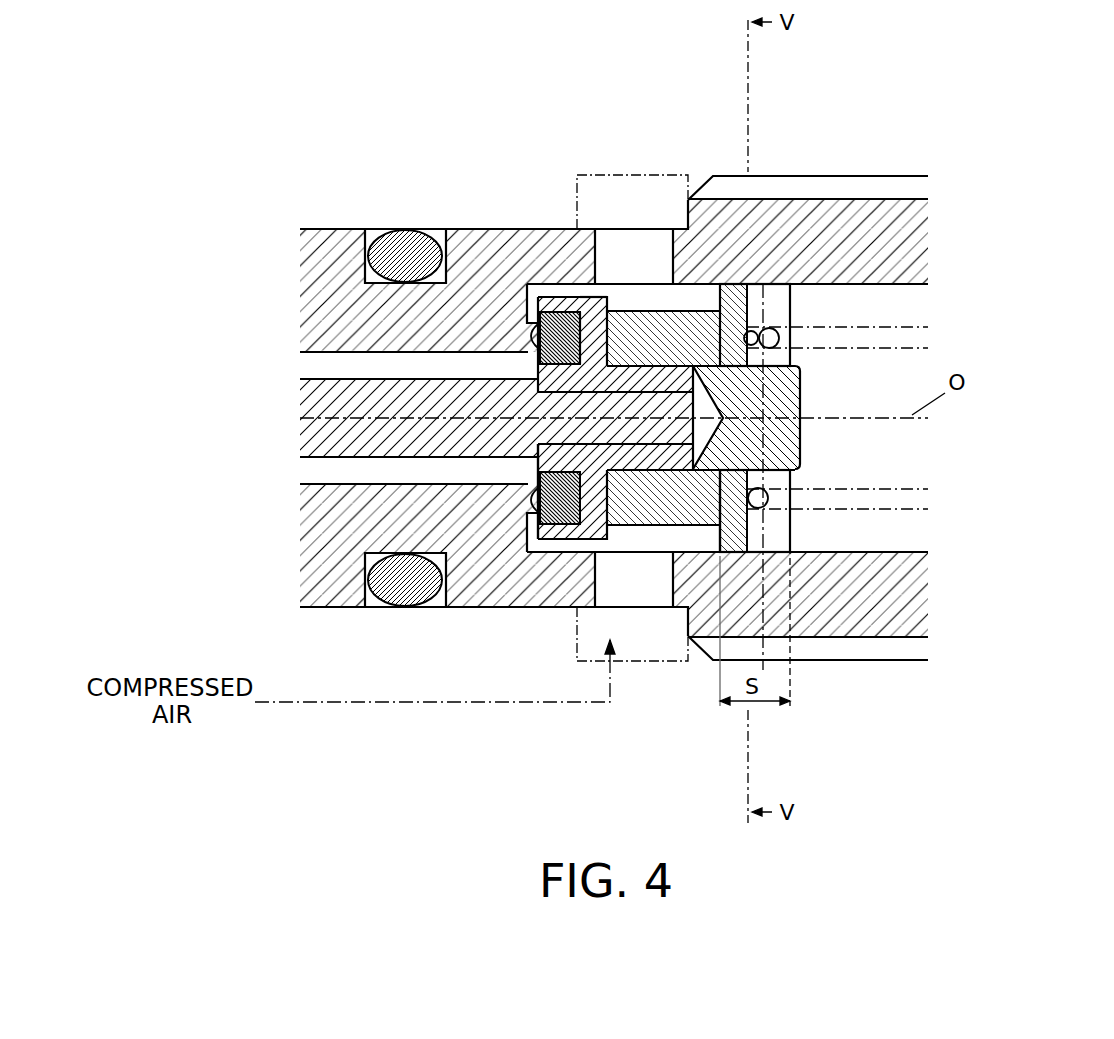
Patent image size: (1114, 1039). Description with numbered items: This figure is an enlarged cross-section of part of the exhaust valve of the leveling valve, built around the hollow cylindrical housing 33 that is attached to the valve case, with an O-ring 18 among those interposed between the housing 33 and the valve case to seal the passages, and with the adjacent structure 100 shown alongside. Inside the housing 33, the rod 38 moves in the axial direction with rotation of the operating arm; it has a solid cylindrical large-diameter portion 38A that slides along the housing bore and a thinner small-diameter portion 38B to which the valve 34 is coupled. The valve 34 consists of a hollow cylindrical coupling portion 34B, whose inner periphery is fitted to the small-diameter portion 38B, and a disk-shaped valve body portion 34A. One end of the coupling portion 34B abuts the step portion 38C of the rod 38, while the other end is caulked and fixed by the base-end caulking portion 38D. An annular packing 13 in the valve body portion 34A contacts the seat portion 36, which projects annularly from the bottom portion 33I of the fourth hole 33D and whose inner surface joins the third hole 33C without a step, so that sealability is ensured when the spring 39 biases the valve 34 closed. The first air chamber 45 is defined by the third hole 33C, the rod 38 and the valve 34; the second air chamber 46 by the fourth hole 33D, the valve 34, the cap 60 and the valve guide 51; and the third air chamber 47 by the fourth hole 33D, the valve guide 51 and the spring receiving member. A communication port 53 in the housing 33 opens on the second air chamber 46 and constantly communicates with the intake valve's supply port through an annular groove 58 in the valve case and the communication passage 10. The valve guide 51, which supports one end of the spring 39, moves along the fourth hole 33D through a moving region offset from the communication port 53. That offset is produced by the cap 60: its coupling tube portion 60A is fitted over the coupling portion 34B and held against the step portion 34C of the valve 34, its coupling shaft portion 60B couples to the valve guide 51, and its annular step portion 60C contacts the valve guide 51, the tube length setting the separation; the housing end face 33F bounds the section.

The communication passage 10 is at (330, 702).
The machine body 100 is at (937, 176).
The packing 13 is at (548, 556).
The O-ring 18 is at (383, 233).
The housing 33 is at (880, 222).
The third hole 33C is at (418, 575).
The fourth hole 33D is at (873, 553).
The housing bottom face 33F is at (877, 661).
The bottom portion (step portion) 33I is at (527, 488).
The valve 34 is at (665, 84).
The valve body portion 34A is at (560, 330).
The coupling portion 34B is at (660, 315).
The step portion 34C is at (610, 300).
The seat portion 36 is at (533, 333).
The rod 38 is at (335, 392).
The large-diameter portion 38A is at (357, 385).
The small-diameter portion 38B is at (586, 313).
The step portion 38C is at (537, 373).
The base-end caulking portion 38D is at (676, 372).
The spring 39 is at (822, 523).
The first air chamber 45 is at (340, 483).
The second air chamber 46 is at (652, 540).
The third air chamber 47 is at (788, 535).
The valve guide 51 is at (722, 552).
The communication port 53 is at (600, 590).
The annular groove 58 is at (575, 656).
The cap 60 is at (885, 84).
The coupling tube portion 60A is at (690, 330).
The coupling shaft portion 60B is at (748, 335).
The annular step portion 60C is at (733, 327).